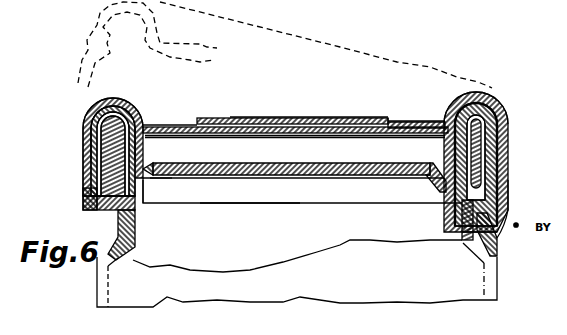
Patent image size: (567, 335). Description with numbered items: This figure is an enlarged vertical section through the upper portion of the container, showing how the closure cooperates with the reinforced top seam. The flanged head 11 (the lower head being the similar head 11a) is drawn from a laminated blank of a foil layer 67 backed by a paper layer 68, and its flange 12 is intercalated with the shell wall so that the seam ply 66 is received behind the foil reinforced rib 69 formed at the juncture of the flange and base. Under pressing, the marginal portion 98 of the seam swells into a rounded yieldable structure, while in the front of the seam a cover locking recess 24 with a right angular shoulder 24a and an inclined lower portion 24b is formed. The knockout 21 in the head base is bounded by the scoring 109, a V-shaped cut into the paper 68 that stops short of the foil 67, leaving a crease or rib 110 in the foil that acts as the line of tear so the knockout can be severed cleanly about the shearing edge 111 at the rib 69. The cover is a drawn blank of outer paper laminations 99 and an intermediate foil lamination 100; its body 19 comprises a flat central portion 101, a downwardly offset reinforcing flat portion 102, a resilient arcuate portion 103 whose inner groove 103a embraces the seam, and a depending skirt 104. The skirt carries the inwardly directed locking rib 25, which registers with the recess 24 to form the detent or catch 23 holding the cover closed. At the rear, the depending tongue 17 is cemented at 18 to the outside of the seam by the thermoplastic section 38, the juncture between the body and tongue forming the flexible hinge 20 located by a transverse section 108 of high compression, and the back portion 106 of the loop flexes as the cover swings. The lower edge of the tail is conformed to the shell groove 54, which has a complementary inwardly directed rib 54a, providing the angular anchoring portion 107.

The flanged head 11a is at (241, 2).
The arcuate portion 103 is at (113, 101).
The complementary groove 103a is at (93, 102).
The detent or catch 23 is at (84, 136).
The right angular shoulder 24a is at (83, 118).
The locking rib 25 is at (90, 148).
The cover locking recess 24 is at (95, 166).
The peripheral depending flange or skirt 104 is at (84, 201).
The inclined lower portion 24b is at (84, 181).
The flat central portion 101 is at (233, 118).
The outer fiber or paper laminations 99 is at (294, 117).
The body of the cover 19 is at (384, 118).
The downwardly offset reinforcing flat portion 102 is at (416, 121).
The intermediate foil lamination 100 is at (350, 118).
The ply of the reinforcing seam 66 is at (151, 124).
The marginal portion of the seam 98 is at (152, 128).
The crease or rib 110 is at (155, 164).
The foil layer 67 is at (332, 160).
The foil reinforced rib 69 is at (450, 185).
The paper layer 68 is at (350, 175).
The flanged head 11 is at (402, 198).
The knockout 21 is at (250, 182).
The scoring 109 is at (158, 180).
The shearing edge 111 is at (147, 180).
The flexible hinge 20 is at (504, 114).
The transverse section of high compression 108 is at (506, 136).
The flange 12 is at (500, 158).
The depending tongue or tail 17 is at (504, 174).
The section of thermoplastic adhesive 38 is at (509, 190).
The anchoring point 18 is at (504, 206).
The back portion of the loop 106 is at (483, 97).
The inwardly directed rib or shoulder 54a is at (463, 210).
The angular anchoring portion 107 is at (497, 242).
The groove 54 is at (462, 242).